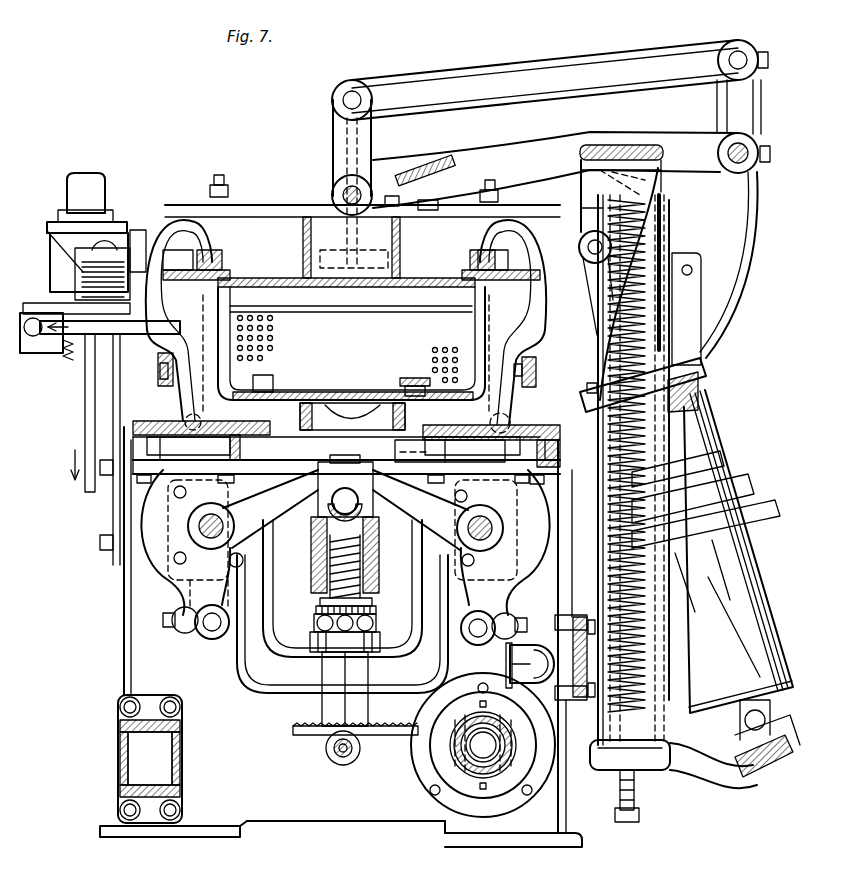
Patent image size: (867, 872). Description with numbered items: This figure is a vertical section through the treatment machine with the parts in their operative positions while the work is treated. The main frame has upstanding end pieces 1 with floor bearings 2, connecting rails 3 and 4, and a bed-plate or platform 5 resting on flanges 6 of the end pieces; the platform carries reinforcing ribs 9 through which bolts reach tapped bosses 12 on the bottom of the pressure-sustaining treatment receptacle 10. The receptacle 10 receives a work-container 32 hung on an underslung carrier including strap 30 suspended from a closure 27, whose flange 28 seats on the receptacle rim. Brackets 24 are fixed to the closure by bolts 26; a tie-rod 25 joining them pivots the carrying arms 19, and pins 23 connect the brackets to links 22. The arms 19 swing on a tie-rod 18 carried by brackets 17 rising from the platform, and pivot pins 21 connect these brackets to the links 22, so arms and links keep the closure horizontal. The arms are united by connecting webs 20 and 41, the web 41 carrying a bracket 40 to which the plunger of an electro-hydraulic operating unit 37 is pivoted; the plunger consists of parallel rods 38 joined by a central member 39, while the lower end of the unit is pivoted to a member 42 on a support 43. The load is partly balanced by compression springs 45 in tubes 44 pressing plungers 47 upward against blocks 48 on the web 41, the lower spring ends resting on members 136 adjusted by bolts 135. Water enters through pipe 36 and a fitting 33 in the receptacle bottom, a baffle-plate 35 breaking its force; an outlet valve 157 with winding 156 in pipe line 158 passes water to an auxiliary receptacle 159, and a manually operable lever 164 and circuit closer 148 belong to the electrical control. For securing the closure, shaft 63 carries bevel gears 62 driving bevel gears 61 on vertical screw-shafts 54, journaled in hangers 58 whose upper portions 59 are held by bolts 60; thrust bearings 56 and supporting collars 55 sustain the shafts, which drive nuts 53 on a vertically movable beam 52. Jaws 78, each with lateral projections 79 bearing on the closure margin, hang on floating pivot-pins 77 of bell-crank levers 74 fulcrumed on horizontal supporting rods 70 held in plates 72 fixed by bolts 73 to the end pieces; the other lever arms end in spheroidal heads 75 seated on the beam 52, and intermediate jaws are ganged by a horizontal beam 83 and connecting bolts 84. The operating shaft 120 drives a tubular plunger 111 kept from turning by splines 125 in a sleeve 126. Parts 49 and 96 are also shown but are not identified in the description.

The end pieces 1 is at (275, 812).
The floor bearings 2 is at (222, 838).
The connecting rail 3 is at (118, 750).
The connecting rail 4 is at (575, 617).
The bed-plate or platform 5 is at (522, 428).
The flanges 6 is at (180, 452).
The reinforcing ribs 9 is at (445, 460).
The treatment receptacle 10 is at (470, 300).
The tapped bosses 12 is at (497, 417).
The brackets 17 is at (730, 278).
The tie-rod 18 is at (745, 150).
The carrying arms 19 is at (683, 145).
The connecting web 20 is at (450, 164).
The pivot pins 21 is at (738, 60).
The links 22 is at (585, 70).
The pins 23 is at (352, 100).
The brackets 24 is at (333, 141).
The tie-rod 25 is at (358, 190).
The bolts 26 is at (345, 262).
The closure 27 is at (362, 286).
The flange 28 is at (300, 270).
The strap 30 is at (236, 300).
The work-container 32 is at (296, 318).
The fitting 33 is at (335, 430).
The baffle-plate 35 is at (382, 392).
The pipe 36 is at (528, 655).
The electro-hydraulic operating unit 37 is at (756, 545).
The parallel rods 38 is at (708, 392).
The central member 39 is at (600, 305).
The bracket 40 is at (581, 186).
The connecting web 41 is at (618, 145).
The member 42 is at (745, 725).
The support 43 is at (760, 775).
The tubes 44 is at (602, 770).
The compression springs 45 is at (690, 310).
The plungers 47 is at (650, 185).
The blocks 48 is at (640, 720).
The flange 49 is at (640, 165).
The vertically movable beam 52 is at (318, 595).
The nuts 53 is at (325, 560).
The screw-shafts 54 is at (372, 602).
The supporting collars 55 is at (376, 610).
The thrust bearings 56 is at (376, 624).
The hangers 58 is at (392, 650).
The upper portions of hangers 59 is at (200, 462).
The bolts 60 is at (538, 486).
The bevel gears 61 is at (295, 735).
The bevel gears 62 is at (360, 757).
The shaft 63 is at (336, 758).
The supporting rods 70 is at (192, 530).
The plates 72 is at (170, 560).
The bolts 73 is at (244, 562).
The bell-crank levers 74 is at (440, 582).
The spheroidal head 75 is at (345, 488).
The floating pivot-pins 77 is at (203, 630).
The jaws 78 is at (165, 228).
The lateral projections 79 is at (205, 240).
The horizontal beam 83 is at (167, 386).
The connecting bolts 84 is at (165, 378).
The bushing 96 is at (395, 430).
The tubular plunger 111 is at (492, 775).
The operating shaft 120 is at (508, 770).
The splines 125 is at (483, 790).
The sleeve 126 is at (470, 772).
The bolts 135 is at (640, 815).
The members 136 is at (634, 795).
The circuit closer 148 is at (138, 230).
The winding 156 is at (60, 225).
The outlet valve 157 is at (40, 345).
The pipe line 158 is at (150, 335).
The auxiliary receptacle 159 is at (60, 246).
The manually operable lever 164 is at (68, 188).